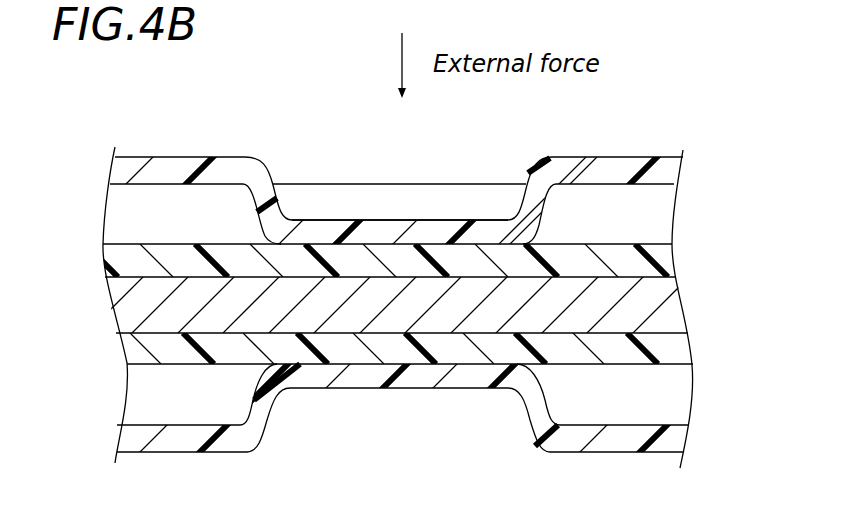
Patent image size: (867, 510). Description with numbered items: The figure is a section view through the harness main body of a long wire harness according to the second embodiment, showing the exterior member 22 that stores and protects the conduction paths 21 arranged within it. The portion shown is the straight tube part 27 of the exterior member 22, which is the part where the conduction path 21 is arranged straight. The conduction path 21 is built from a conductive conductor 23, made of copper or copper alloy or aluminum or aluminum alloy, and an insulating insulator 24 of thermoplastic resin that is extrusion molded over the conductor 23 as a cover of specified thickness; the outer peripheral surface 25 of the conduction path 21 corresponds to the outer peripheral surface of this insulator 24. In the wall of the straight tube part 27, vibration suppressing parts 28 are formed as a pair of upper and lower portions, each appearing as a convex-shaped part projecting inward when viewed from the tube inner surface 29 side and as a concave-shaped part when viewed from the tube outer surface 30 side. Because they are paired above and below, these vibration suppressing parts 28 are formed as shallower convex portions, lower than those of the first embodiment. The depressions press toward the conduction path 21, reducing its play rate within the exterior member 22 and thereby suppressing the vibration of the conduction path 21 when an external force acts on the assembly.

The conduction path 21 is at (773, 293).
The exterior member 22 is at (626, 152).
The conductor 23 is at (667, 308).
The insulator 24 is at (667, 350).
The outer peripheral surface 25 is at (637, 366).
The straight tube part 27 is at (172, 157).
The vibration suppressing part 28 is at (467, 377).
The tube inner surface 29 is at (648, 186).
The tube outer surface 30 is at (645, 160).